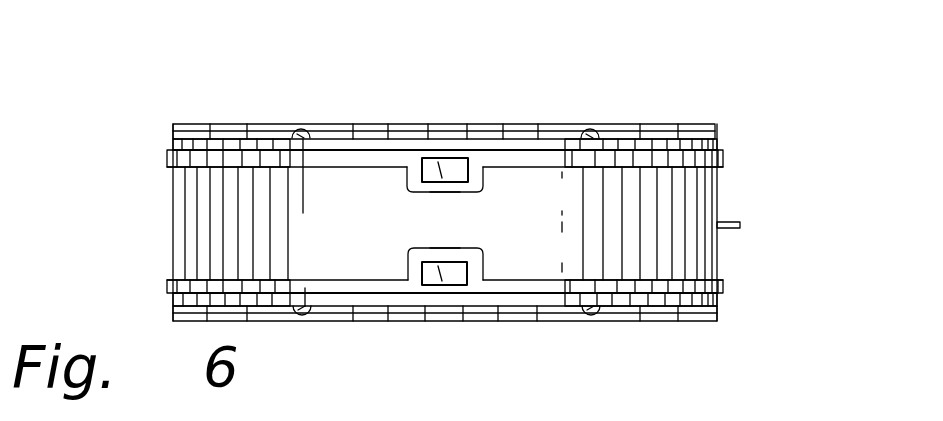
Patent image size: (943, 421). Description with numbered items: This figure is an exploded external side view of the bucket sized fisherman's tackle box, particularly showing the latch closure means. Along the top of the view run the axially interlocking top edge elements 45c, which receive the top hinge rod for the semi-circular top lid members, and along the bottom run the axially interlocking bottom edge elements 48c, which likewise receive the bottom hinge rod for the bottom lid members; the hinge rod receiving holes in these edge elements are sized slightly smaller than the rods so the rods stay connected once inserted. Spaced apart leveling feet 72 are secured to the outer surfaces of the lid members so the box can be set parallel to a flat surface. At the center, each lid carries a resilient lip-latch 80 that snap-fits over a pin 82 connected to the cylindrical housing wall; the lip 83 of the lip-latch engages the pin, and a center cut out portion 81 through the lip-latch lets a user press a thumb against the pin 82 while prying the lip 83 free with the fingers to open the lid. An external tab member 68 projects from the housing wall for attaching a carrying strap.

The axially interlocking top edge elements 45c is at (193, 128).
The axially interlocking bottom edge elements 48c is at (187, 321).
The leveling feet 72 is at (300, 126).
The resilient lip-latch 80 is at (491, 178).
The center cut out portion 81 is at (422, 168).
The pin 82 is at (440, 170).
The lip 83 is at (448, 194).
The external tab member 68 is at (731, 221).